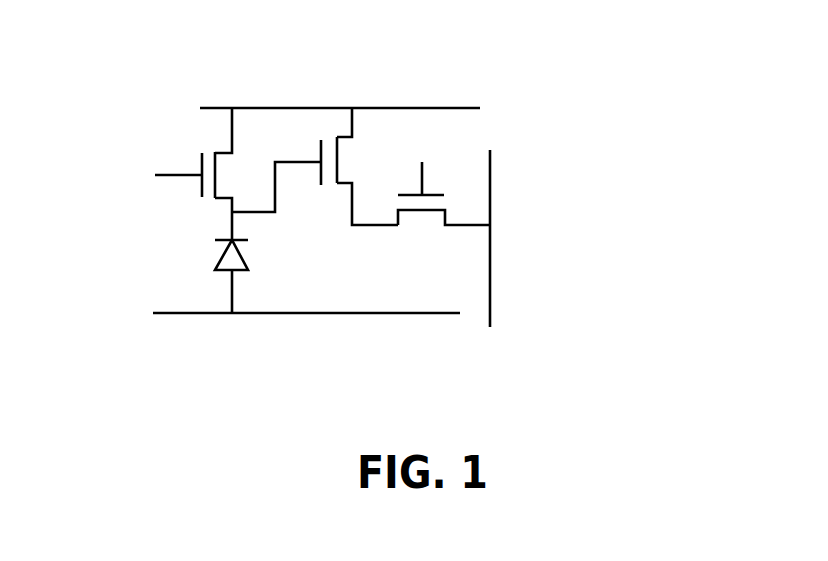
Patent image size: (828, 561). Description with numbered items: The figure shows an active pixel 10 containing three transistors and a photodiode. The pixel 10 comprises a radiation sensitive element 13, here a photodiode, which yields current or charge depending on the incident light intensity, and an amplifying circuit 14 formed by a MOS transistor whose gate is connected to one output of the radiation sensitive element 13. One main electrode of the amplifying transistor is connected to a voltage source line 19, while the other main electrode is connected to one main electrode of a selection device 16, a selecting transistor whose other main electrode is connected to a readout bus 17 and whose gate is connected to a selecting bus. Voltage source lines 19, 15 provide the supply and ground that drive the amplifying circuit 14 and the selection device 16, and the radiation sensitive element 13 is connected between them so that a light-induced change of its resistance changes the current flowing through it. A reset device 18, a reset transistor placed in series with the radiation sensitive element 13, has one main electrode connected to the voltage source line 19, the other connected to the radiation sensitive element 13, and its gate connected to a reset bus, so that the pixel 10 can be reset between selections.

The pixel 10 is at (588, 115).
The radiation sensitive element 13 is at (213, 258).
The amplifying circuit 14 is at (327, 195).
The voltage source line 15 is at (189, 315).
The selection device 16 is at (420, 222).
The readout bus 17 is at (492, 188).
The reset device 18 is at (190, 137).
The voltage source line 19 is at (426, 101).